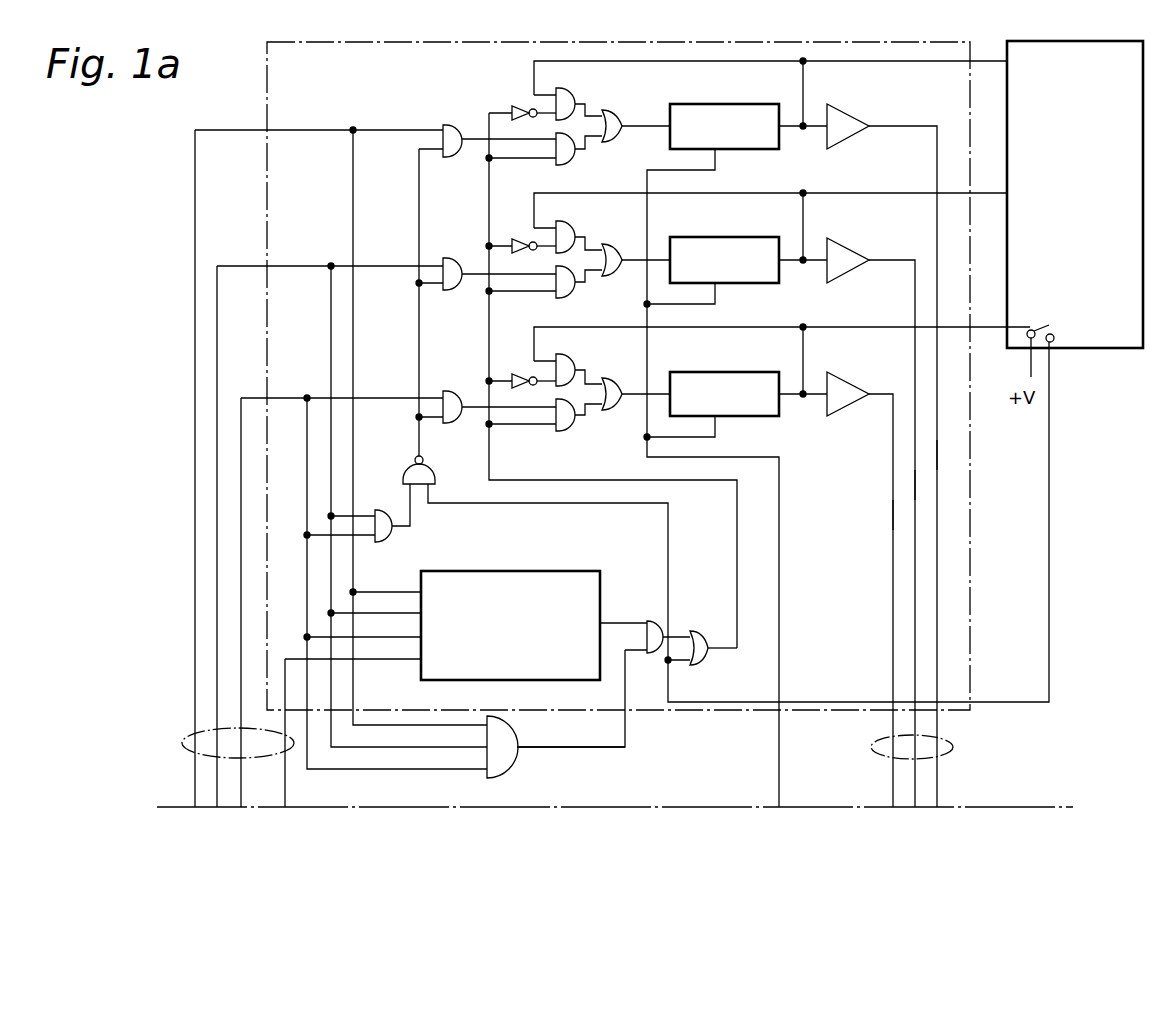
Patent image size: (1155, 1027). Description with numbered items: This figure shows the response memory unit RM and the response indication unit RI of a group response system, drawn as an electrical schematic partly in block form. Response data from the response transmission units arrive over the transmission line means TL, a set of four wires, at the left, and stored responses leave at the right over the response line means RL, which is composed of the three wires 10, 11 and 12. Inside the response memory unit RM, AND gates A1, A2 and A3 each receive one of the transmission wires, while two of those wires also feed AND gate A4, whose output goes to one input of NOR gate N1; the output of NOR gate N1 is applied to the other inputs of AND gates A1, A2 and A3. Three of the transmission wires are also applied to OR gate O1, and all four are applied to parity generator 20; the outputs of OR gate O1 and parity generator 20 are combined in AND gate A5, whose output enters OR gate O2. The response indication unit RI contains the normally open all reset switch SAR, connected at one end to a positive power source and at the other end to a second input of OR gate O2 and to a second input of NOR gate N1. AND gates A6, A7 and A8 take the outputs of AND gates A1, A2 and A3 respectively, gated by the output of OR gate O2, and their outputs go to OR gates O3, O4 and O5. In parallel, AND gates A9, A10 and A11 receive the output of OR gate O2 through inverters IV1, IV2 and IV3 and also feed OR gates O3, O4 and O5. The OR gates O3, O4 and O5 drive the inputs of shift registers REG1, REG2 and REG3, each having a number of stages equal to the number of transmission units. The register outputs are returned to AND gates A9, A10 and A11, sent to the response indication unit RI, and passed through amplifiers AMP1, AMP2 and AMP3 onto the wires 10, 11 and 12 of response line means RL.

The AND gate A1 is at (455, 126).
The AND gate A2 is at (455, 259).
The AND gate A3 is at (455, 392).
The AND gate A4 is at (386, 542).
The AND gate A5 is at (655, 618).
The AND gate A6 is at (568, 167).
The AND gate A7 is at (568, 300).
The AND gate A8 is at (568, 433).
The AND gate A9 is at (566, 84).
The AND gate A10 is at (566, 218).
The AND gate A11 is at (570, 357).
The inverter IV1 is at (516, 108).
The inverter IV2 is at (516, 241).
The inverter IV3 is at (516, 376).
The OR gate O1 is at (512, 720).
The OR gate O2 is at (700, 631).
The OR gate O3 is at (618, 110).
The OR gate O4 is at (626, 244).
The OR gate O5 is at (626, 378).
The NOR gate N1 is at (405, 464).
The shift register REG1 is at (748, 126).
The shift register REG2 is at (748, 260).
The shift register REG3 is at (748, 394).
The amplifier AMP1 is at (852, 106).
The amplifier AMP2 is at (852, 240).
The amplifier AMP3 is at (860, 372).
The wire 10 is at (937, 452).
The wire 11 is at (915, 483).
The wire 12 is at (893, 515).
The parity generator 20 is at (553, 571).
The response indication unit RI is at (1108, 350).
The all reset switch SAR is at (1046, 326).
The response memory unit RM is at (970, 563).
The transmission line means TL is at (183, 743).
The response line means RL is at (953, 745).